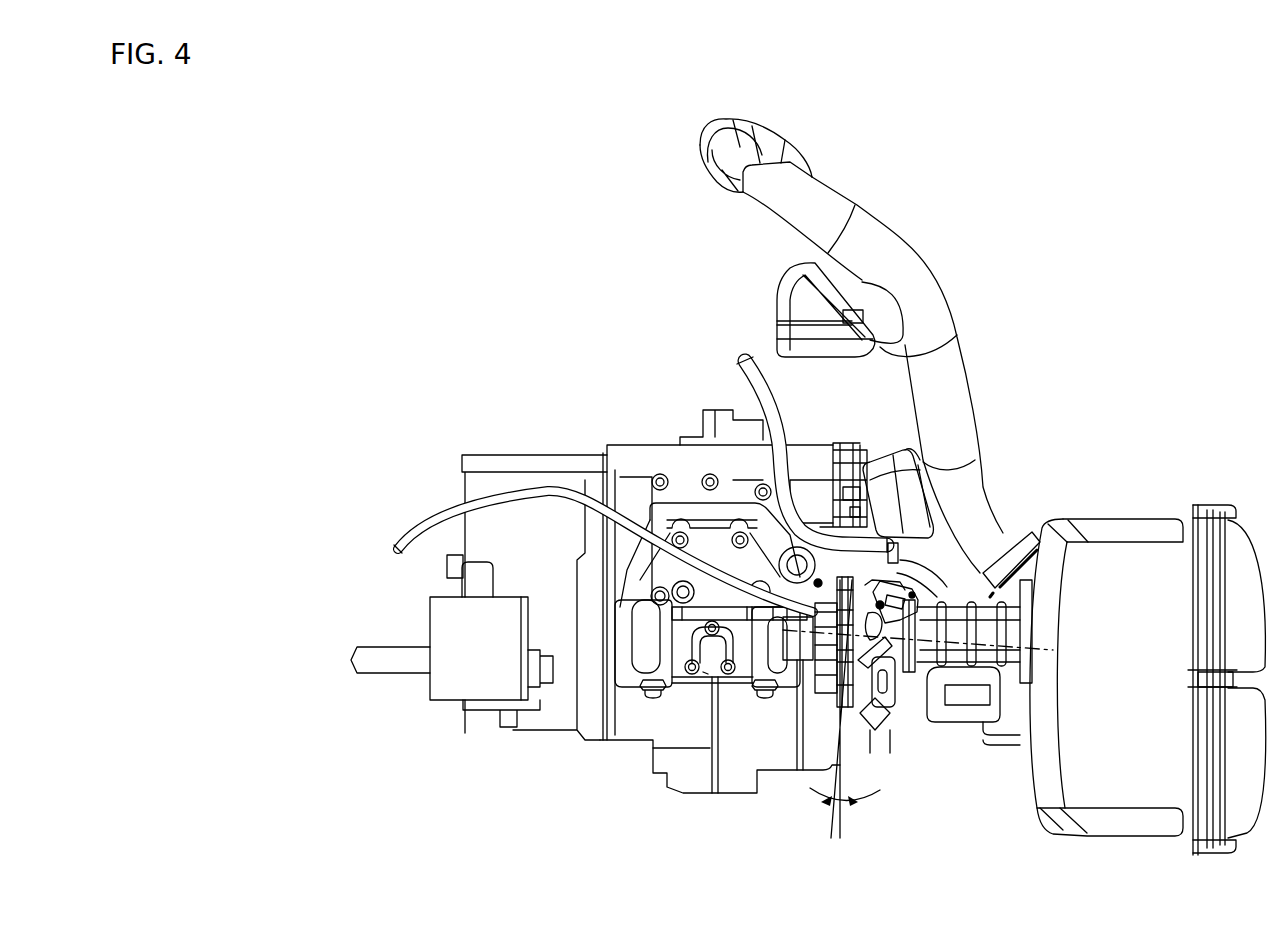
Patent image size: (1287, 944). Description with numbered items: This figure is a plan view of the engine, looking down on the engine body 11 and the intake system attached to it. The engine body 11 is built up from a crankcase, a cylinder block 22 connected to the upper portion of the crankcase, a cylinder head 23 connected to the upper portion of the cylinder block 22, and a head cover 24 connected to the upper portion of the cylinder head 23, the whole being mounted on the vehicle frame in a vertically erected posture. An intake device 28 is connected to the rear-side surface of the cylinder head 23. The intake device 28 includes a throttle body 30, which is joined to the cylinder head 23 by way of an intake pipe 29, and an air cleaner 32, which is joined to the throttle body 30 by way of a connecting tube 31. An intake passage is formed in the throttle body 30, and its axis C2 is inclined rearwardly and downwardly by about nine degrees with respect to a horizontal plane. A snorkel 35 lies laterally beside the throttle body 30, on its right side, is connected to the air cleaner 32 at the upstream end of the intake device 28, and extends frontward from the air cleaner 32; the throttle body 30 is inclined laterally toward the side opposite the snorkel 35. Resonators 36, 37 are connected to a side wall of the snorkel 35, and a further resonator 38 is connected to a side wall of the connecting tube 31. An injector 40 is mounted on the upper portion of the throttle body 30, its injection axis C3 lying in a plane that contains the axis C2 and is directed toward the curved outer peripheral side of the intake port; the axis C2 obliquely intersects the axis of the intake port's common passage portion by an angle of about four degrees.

The engine body 11 is at (640, 438).
The cylinder block 22 is at (597, 745).
The cylinder head 23 is at (718, 520).
The head cover 24 is at (705, 672).
The intake device 28 is at (918, 670).
The intake pipe 29 is at (802, 677).
The throttle body 30 is at (880, 575).
The connecting tube 31 is at (990, 580).
The air cleaner 32 is at (1133, 701).
The snorkel 35 is at (900, 262).
The resonator 36 is at (777, 310).
The resonator 37 is at (888, 445).
The resonator 38 is at (965, 717).
The injector 40 is at (833, 707).
The axis of the intake passage C2 is at (1030, 620).
The injection axis C3 is at (984, 631).